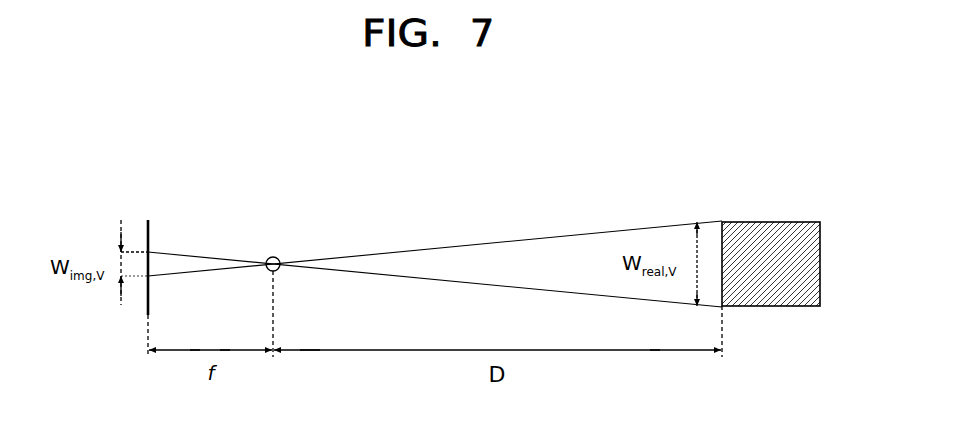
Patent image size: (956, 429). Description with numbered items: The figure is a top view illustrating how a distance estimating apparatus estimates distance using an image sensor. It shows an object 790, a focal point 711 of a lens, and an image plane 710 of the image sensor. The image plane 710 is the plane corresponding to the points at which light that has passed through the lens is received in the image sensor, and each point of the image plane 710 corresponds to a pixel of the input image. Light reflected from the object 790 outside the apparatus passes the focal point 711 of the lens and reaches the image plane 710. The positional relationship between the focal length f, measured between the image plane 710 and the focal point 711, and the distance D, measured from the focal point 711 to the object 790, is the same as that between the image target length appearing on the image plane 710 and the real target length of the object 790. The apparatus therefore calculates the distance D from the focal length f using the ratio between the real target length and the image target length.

The image plane 710 is at (150, 232).
The focal point 711 is at (273, 257).
The object 790 is at (770, 221).